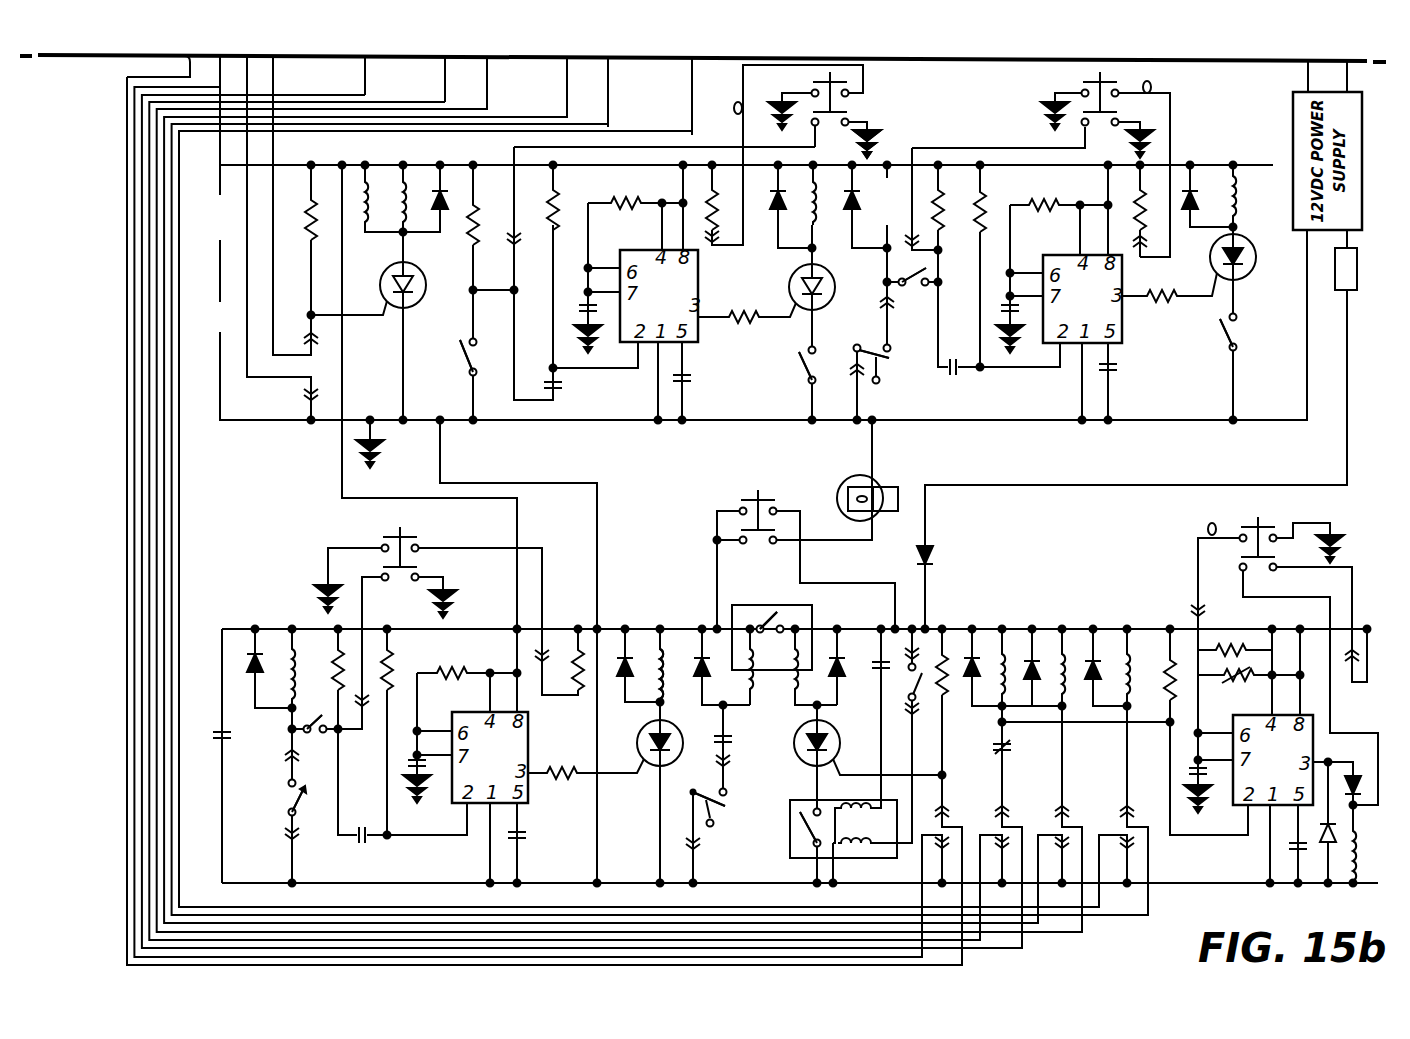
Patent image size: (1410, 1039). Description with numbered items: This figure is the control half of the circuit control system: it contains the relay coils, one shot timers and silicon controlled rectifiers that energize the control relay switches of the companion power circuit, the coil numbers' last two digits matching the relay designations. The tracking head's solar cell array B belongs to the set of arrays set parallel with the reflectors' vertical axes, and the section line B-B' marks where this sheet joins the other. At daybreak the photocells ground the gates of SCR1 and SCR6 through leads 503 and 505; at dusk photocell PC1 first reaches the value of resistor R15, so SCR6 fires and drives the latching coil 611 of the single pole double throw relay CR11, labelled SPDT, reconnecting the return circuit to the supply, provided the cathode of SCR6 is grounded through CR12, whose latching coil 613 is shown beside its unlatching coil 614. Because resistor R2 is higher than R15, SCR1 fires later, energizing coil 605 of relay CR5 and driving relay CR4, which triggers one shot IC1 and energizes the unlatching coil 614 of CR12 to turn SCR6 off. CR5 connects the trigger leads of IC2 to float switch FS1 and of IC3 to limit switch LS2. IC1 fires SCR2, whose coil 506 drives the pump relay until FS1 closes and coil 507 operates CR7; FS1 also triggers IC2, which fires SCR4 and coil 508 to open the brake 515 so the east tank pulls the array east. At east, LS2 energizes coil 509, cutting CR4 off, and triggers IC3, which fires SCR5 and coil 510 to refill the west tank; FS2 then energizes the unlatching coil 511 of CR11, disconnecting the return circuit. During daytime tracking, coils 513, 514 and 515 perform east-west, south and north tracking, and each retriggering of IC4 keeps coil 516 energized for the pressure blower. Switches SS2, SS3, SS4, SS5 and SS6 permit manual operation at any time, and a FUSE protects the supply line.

The solar cell array B is at (24, 42).
The section line B' is at (1368, 46).
The lead 505 is at (158, 53).
The lead 503 is at (276, 78).
The coil of CR5 605 is at (366, 176).
The resistor R2 is at (308, 228).
The silicon controlled rectifier SCR1 is at (440, 267).
The control relay CR4 is at (462, 364).
The selector switch SS2 is at (826, 74).
The coil of CR6 506 is at (815, 187).
The coil of CR7 507 is at (878, 128).
The selector switch SS3 is at (1095, 74).
The coil of CR8 508 is at (1236, 178).
The silicon controlled rectifier SCR2 is at (790, 284).
The one shot integrated circuit IC1 is at (659, 296).
The one shot integrated circuit IC2 is at (1082, 299).
The one shot integrated circuit IC3 is at (490, 757).
The one shot integrated circuit IC4 is at (1273, 760).
The control relay CR7 is at (803, 368).
The float switch FS1 is at (876, 352).
The control relay CR5 is at (312, 722).
The silicon controlled rectifier SCR4 is at (1254, 266).
The fuse FUSE is at (1326, 290).
The selector switch SS4 is at (766, 498).
The control relay CR11 is at (779, 608).
The single pole double throw switch SPDT is at (806, 626).
The coil of CR10 510 is at (665, 648).
The unlatching coil of CR11 511 is at (735, 671).
The latching coil of CR11 611 is at (814, 671).
The resistor R15 is at (942, 655).
The coil of CR13 513 is at (1005, 650).
The coil of CR14 514 is at (1065, 650).
The coil of CR15 515 is at (1128, 650).
The selector switch SS5 is at (1262, 520).
The selector switch SS6 is at (403, 534).
The coil of CR9 509 is at (296, 645).
The limit switch LS2 is at (276, 799).
The silicon controlled rectifier SCR5 is at (640, 738).
The silicon controlled rectifier SCR6 is at (795, 748).
The float switch FS2 is at (722, 800).
The control relay CR12 is at (790, 846).
The unlatching coil of CR12 614 is at (858, 805).
The relay coil 613 is at (842, 850).
The coil of CR16 516 is at (1356, 882).